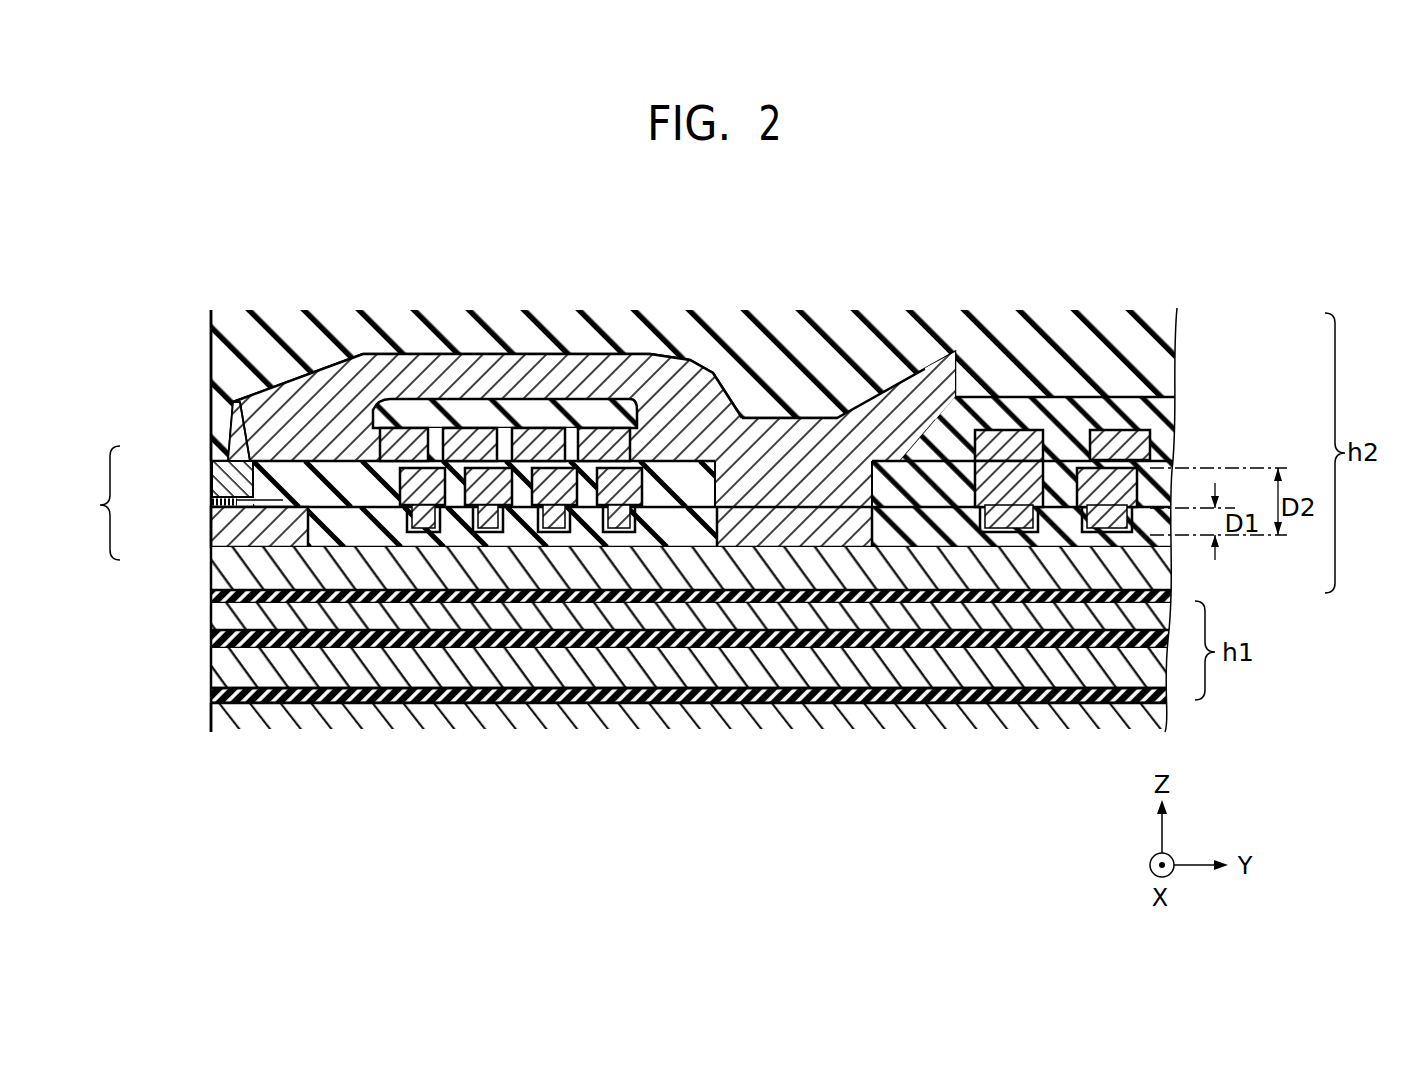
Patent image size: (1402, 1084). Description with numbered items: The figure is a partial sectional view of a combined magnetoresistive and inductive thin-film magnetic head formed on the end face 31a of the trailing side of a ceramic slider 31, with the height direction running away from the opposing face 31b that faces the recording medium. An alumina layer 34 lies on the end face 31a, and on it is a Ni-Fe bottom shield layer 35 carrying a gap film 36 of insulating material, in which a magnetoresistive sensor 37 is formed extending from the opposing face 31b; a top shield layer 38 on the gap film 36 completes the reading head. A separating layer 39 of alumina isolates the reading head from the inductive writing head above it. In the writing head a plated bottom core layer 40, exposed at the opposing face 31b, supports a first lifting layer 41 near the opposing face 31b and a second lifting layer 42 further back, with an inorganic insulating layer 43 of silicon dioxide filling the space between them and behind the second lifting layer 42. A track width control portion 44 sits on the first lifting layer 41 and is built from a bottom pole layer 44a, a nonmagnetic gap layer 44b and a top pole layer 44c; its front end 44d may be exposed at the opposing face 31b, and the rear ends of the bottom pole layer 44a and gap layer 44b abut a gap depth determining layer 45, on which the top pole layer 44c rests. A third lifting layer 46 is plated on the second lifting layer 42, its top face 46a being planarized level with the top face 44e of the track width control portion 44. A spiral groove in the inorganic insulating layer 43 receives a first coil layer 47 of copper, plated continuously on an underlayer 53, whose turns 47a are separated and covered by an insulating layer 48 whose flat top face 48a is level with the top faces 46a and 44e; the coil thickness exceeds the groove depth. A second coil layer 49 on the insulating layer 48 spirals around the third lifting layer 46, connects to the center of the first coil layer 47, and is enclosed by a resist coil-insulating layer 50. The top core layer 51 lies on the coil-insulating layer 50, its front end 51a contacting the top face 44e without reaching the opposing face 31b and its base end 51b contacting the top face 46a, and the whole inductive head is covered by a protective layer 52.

The slider 31 is at (355, 715).
The end face 31a is at (458, 705).
The opposing face 31b is at (210, 712).
The alumina layer 34 is at (238, 708).
The bottom shield layer 35 is at (285, 668).
The gap film 36 is at (320, 698).
The magnetoresistive sensor 37 is at (212, 642).
The top shield layer 38 is at (210, 634).
The separating layer 39 is at (217, 610).
The bottom core layer 40 is at (210, 597).
The first lifting layer 41 is at (223, 577).
The second lifting layer 42 is at (805, 525).
The inorganic insulating layer 43 is at (757, 525).
The track width control portion 44 is at (183, 481).
The bottom pole layer 44a is at (208, 533).
The gap layer 44b is at (207, 500).
The top pole layer 44c is at (207, 492).
The front end 44d is at (207, 470).
The top face 44e is at (252, 455).
The gap depth determining layer 45 is at (318, 395).
The third lifting layer 46 is at (812, 440).
The top face 46a is at (880, 470).
The first coil layer 47 is at (1085, 532).
The turns 47a is at (425, 532).
The insulating layer 48 is at (700, 485).
The top face 48a is at (648, 445).
The second coil layer 49 is at (492, 440).
The coil-insulating layer 50 is at (438, 408).
The top core layer 51 is at (573, 380).
The front end 51a is at (232, 380).
The base end 51b is at (760, 400).
The protective layer 52 is at (369, 338).
The underlayer 53 is at (412, 540).